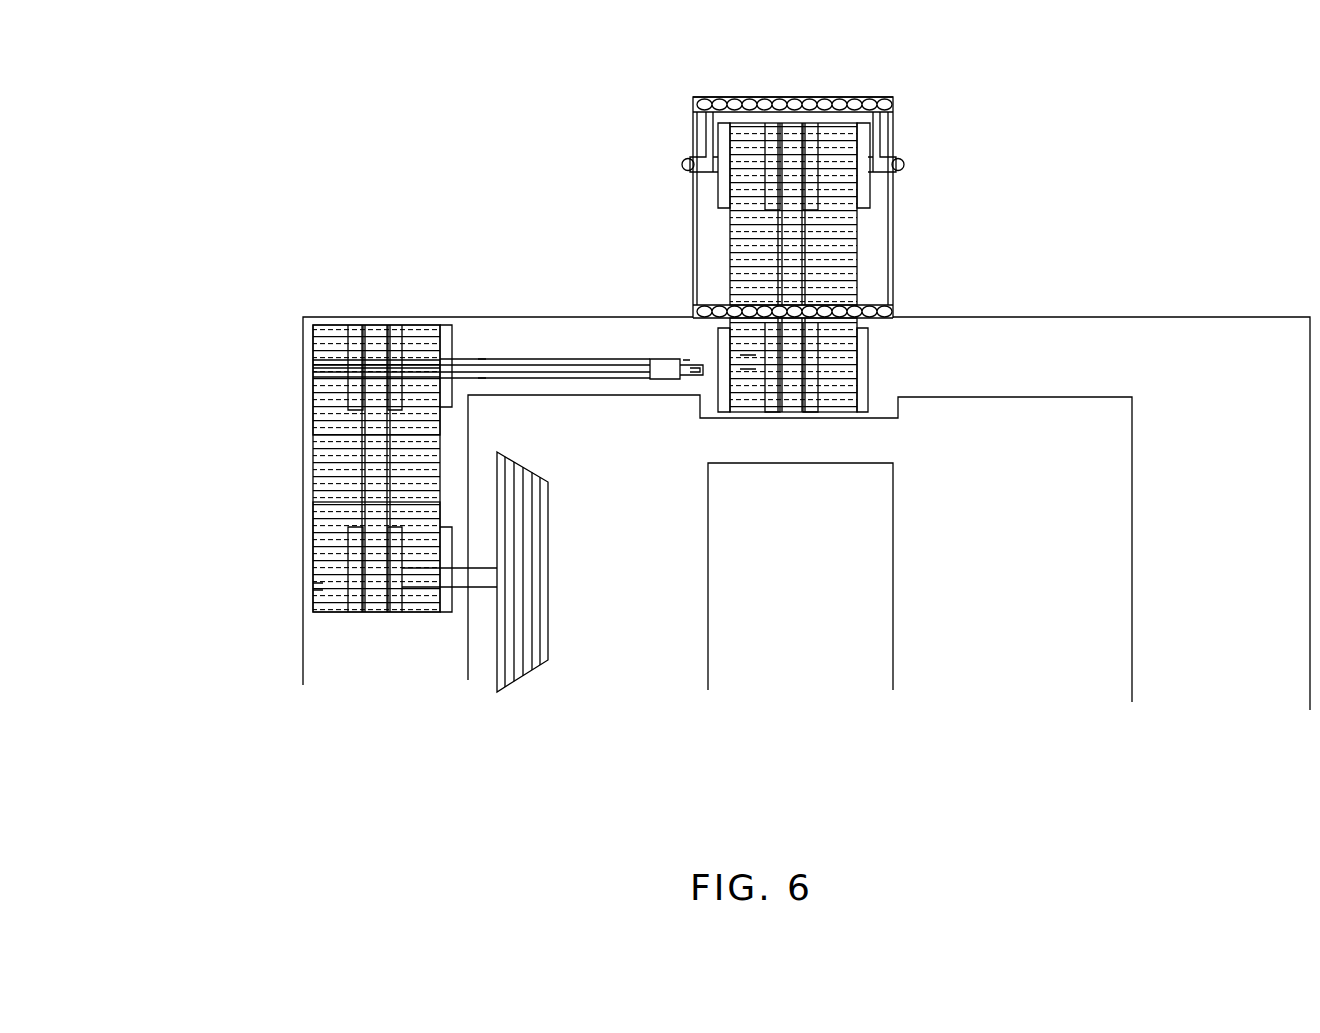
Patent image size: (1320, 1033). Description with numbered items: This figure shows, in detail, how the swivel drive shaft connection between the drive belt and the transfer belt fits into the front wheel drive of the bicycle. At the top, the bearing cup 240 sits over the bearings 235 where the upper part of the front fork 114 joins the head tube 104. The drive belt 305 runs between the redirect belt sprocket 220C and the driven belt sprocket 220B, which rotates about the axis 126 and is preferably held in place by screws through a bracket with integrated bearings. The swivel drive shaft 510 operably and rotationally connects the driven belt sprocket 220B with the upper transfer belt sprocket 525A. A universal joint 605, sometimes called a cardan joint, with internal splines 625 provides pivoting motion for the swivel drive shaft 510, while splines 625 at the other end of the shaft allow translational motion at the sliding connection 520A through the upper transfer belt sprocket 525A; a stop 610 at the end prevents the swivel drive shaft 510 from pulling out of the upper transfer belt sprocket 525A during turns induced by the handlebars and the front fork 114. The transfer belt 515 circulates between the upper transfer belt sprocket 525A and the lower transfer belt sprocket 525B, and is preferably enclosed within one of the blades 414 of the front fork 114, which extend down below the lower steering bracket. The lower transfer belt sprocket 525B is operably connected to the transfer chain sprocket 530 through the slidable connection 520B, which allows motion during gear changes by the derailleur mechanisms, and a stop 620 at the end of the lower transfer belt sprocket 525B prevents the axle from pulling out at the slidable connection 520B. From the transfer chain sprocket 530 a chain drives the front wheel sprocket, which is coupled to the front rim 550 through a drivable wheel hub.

The head tube 104 is at (793, 190).
The front fork 114 is at (1118, 317).
The axis 126 is at (687, 163).
The driven belt sprocket 220B is at (870, 363).
The redirect belt sprocket 220C is at (882, 214).
The bearings 235 is at (893, 108).
The bearing cup 240 is at (893, 100).
The drive belt 305 is at (857, 262).
The blade 414 is at (413, 671).
The swivel drive shaft 510 is at (513, 360).
The transfer belt 515 is at (369, 460).
The sliding connection 520A is at (313, 362).
The slidable connection 520B is at (313, 572).
The upper transfer belt sprocket 525A is at (455, 352).
The lower transfer belt sprocket 525B is at (333, 615).
The transfer chain sprocket 530 is at (548, 482).
The front rim 550 is at (833, 524).
The universal joint 605 is at (748, 362).
The stop 610 is at (313, 370).
The stop 620 is at (323, 582).
The splines 625 is at (690, 360).